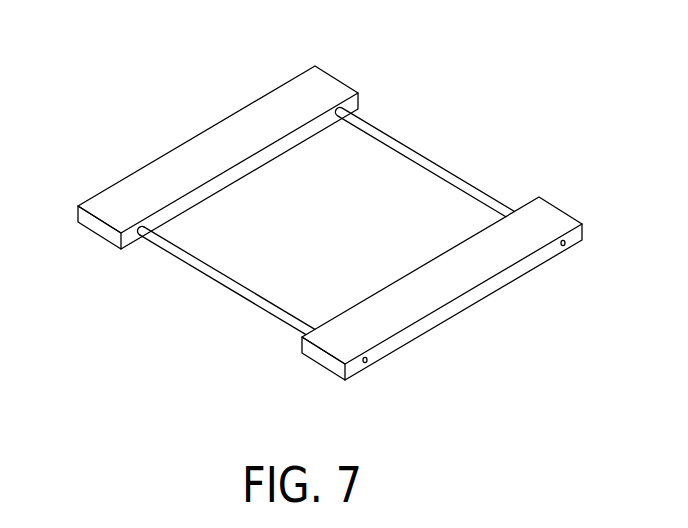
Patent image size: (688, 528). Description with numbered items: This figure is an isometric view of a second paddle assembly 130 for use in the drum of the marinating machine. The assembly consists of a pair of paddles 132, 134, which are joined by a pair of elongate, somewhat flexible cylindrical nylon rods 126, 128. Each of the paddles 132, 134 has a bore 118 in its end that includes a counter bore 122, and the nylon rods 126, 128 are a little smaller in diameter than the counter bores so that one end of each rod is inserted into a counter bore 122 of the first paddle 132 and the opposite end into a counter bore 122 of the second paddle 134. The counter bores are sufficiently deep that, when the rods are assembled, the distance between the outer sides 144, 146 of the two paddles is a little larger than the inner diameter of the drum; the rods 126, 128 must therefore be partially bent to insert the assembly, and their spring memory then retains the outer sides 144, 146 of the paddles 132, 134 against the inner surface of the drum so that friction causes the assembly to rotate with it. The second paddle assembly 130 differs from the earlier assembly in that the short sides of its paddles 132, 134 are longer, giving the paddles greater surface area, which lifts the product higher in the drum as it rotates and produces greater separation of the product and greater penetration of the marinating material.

The second paddle assembly 130 is at (330, 216).
The paddle 132 is at (218, 139).
The paddle 134 is at (439, 292).
The nylon rod 126 is at (440, 165).
The nylon rod 128 is at (196, 280).
The outer side 144 is at (182, 145).
The outer side 146 is at (430, 323).
The bore 118 is at (369, 363).
The counter bore 122 is at (134, 242).